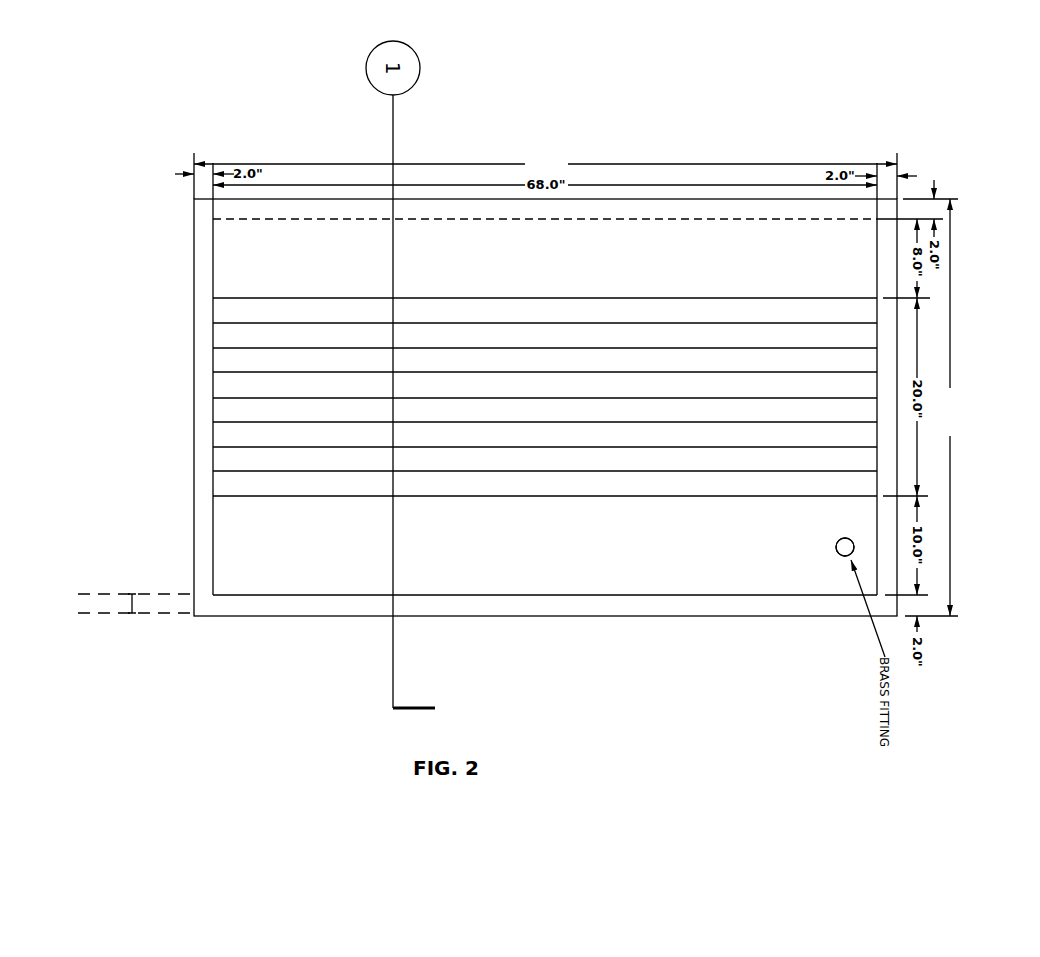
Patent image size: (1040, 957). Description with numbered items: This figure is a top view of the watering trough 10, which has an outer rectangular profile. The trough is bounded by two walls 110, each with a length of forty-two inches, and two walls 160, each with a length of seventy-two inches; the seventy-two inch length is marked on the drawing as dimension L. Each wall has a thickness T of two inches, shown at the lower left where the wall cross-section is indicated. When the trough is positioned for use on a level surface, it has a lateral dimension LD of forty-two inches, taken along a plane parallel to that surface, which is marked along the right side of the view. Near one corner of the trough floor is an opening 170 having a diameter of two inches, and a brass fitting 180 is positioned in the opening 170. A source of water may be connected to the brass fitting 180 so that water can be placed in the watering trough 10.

The watering trough 10 is at (522, 118).
The walls 110 is at (203, 417).
The walls 160 is at (622, 213).
The opening 170 is at (839, 556).
The brass fitting 180 is at (842, 554).
The length L is at (567, 175).
The lateral dimension LD is at (975, 407).
The thickness T is at (132, 612).